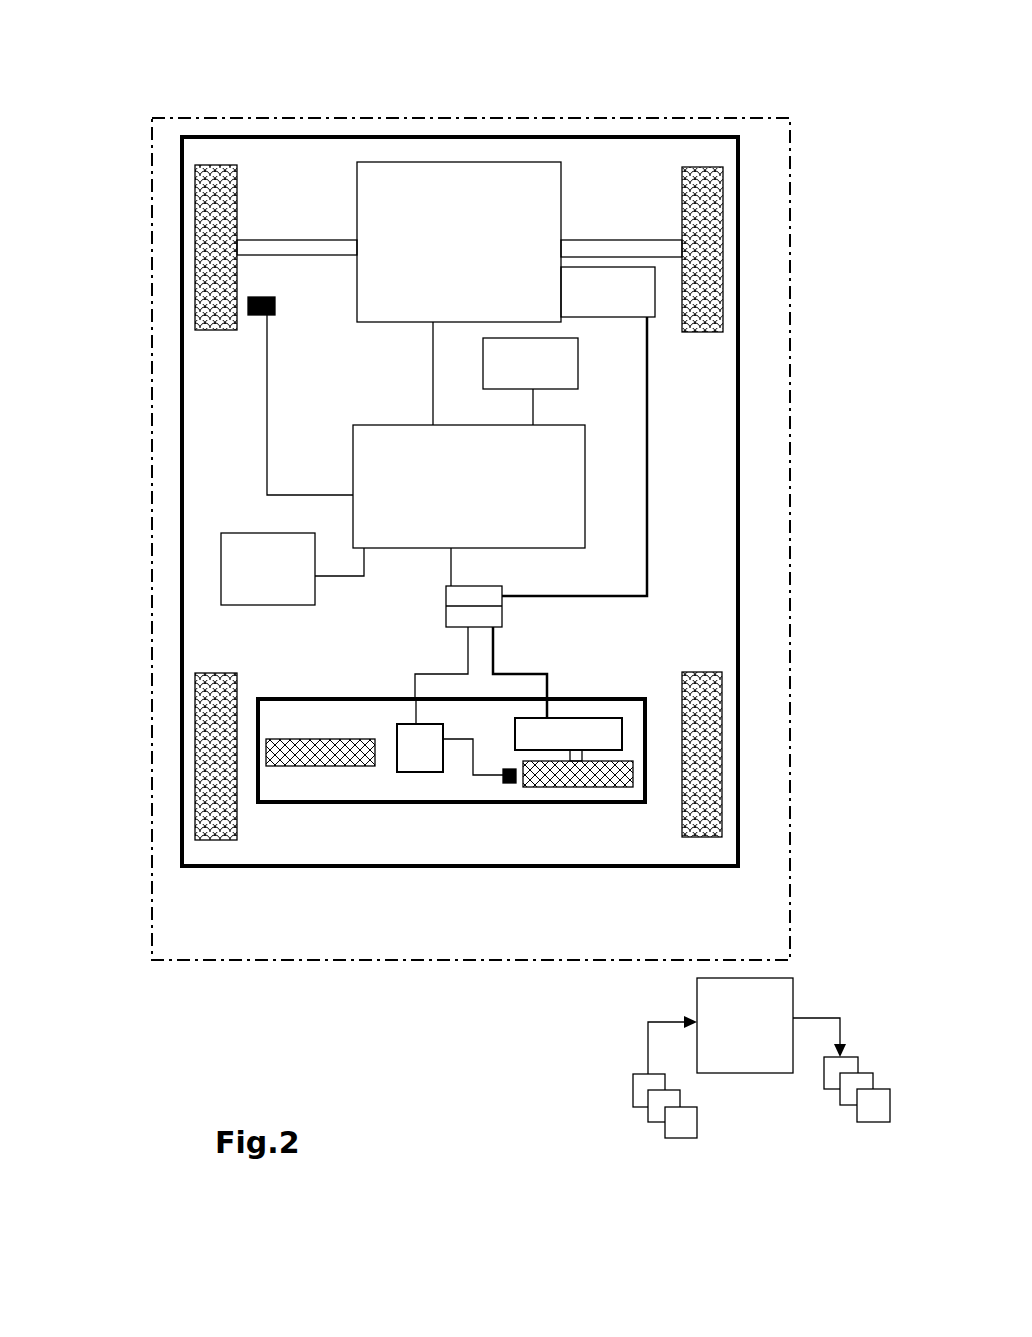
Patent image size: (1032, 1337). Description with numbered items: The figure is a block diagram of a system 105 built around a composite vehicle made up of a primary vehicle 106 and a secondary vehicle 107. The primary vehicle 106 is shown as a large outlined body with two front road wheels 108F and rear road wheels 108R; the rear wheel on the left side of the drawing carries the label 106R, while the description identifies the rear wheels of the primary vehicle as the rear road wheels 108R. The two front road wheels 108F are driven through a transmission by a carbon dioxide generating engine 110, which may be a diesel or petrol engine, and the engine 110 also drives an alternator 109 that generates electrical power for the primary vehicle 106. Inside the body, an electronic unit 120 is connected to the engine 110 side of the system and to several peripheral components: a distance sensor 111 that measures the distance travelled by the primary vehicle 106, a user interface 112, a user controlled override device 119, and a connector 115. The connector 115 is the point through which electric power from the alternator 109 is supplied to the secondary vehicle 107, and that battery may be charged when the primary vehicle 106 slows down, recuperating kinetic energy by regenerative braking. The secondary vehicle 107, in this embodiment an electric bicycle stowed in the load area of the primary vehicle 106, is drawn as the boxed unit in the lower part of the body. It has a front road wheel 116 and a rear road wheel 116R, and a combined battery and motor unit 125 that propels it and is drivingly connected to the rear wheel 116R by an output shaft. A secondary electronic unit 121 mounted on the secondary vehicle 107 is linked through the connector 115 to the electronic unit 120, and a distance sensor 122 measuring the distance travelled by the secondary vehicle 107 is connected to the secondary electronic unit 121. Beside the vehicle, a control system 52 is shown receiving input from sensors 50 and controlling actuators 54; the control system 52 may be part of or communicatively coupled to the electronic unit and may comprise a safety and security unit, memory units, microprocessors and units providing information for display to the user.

The system 105 is at (194, 111).
The primary vehicle 106 is at (174, 431).
The rear left wheel 106R is at (195, 703).
The secondary vehicle 107 is at (364, 800).
The front road wheels 108F is at (197, 248).
The rear road wheels 108R is at (697, 837).
The alternator 109 is at (578, 431).
The engine 110 is at (459, 293).
The distance sensor 111 is at (275, 303).
The user interface 112 is at (292, 569).
The connector 115 is at (447, 612).
The front road wheel 116 is at (312, 739).
The rear road wheel 116R is at (567, 787).
The user controlled override device 119 is at (530, 381).
The electronic unit 120 is at (469, 505).
The secondary electronic unit 121 is at (423, 773).
The distance sensor 122 is at (506, 783).
The combined battery and motor unit 125 is at (582, 718).
The sensors 50 is at (675, 1104).
The control system 52 is at (745, 1025).
The actuators 54 is at (858, 1098).